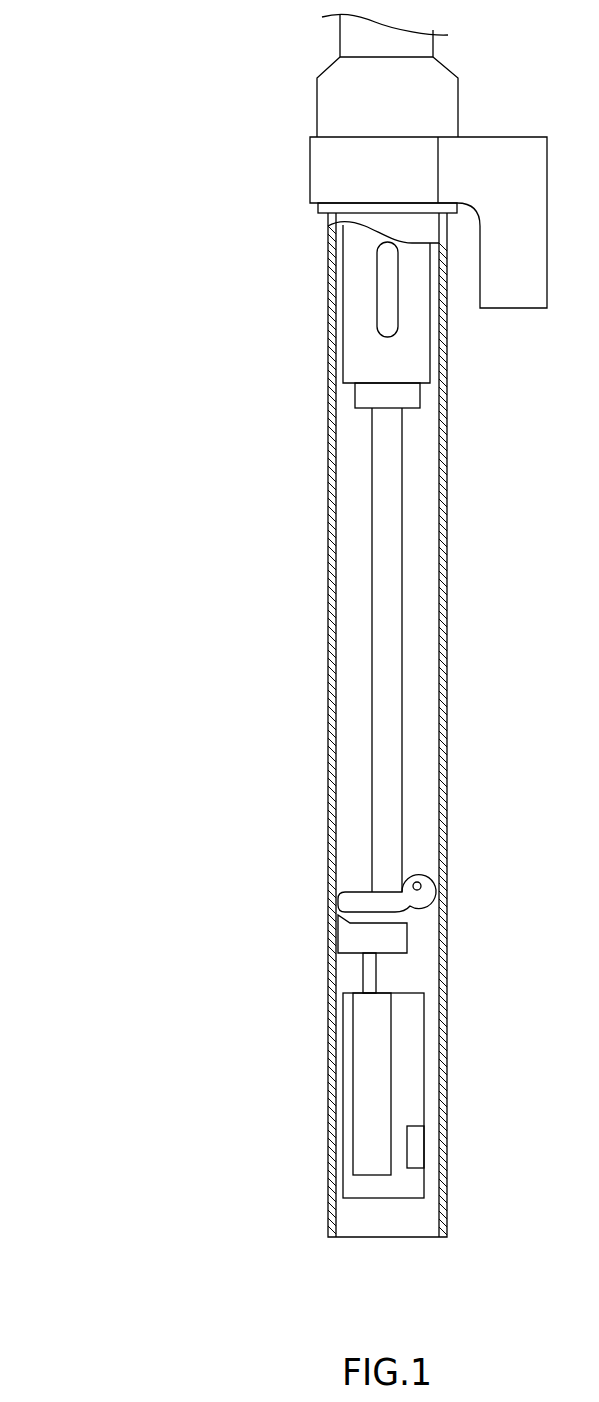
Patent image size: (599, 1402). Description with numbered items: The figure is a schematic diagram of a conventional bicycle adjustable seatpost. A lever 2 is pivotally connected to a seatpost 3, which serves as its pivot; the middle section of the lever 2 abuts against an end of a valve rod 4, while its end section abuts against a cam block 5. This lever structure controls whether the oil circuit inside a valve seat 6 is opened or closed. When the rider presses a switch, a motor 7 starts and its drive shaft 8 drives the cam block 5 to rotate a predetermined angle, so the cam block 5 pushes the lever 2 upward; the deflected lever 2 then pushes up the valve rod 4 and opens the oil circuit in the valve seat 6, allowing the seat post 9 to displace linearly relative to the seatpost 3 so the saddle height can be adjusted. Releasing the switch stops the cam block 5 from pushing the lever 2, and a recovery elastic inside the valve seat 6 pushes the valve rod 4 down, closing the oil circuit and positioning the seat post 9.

The lever 2 is at (355, 902).
The seatpost 3 is at (443, 770).
The valve rod 4 is at (386, 712).
The cam block 5 is at (352, 942).
The valve seat 6 is at (362, 358).
The motor 7 is at (363, 1095).
The drive shaft 8 is at (368, 978).
The seat post 9 is at (423, 43).